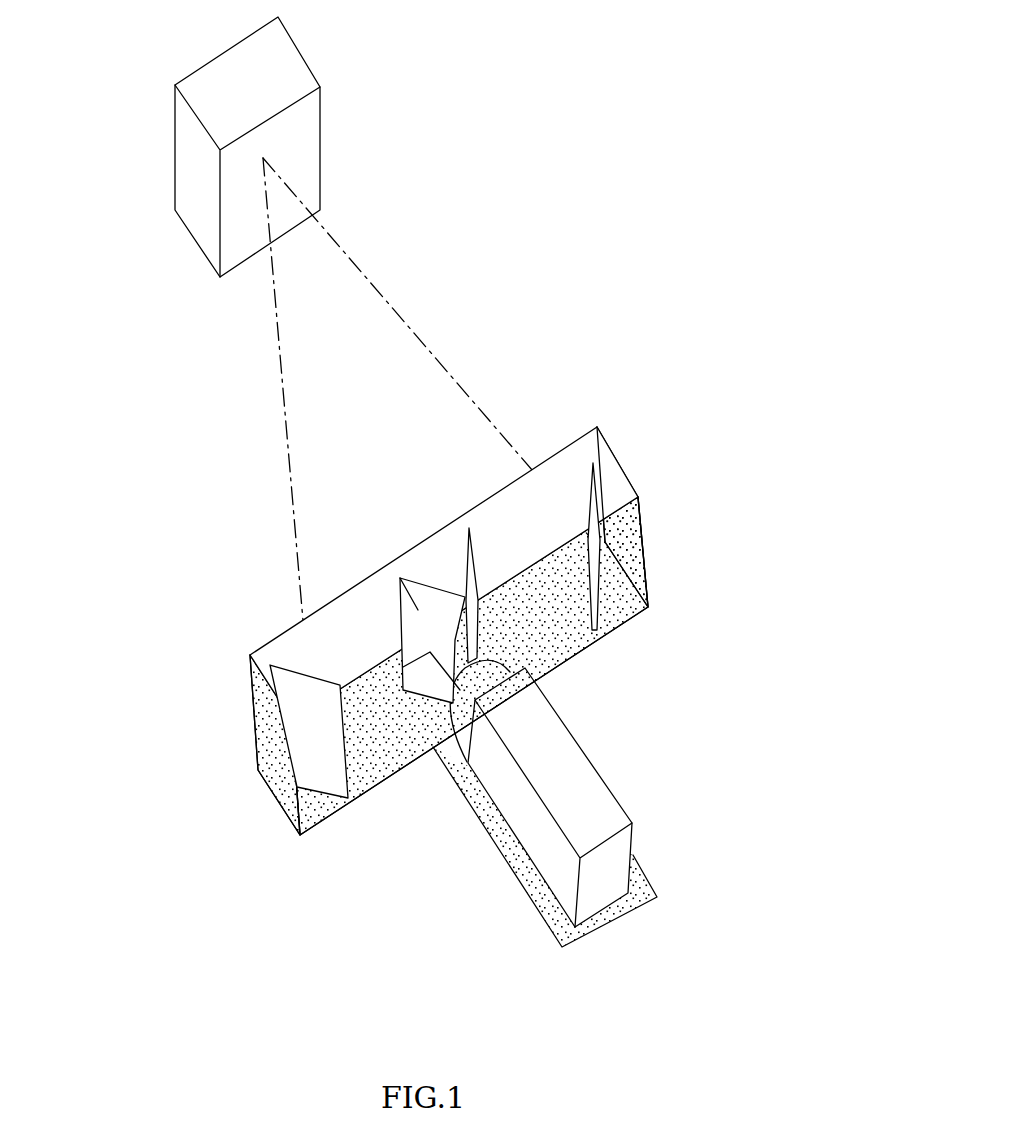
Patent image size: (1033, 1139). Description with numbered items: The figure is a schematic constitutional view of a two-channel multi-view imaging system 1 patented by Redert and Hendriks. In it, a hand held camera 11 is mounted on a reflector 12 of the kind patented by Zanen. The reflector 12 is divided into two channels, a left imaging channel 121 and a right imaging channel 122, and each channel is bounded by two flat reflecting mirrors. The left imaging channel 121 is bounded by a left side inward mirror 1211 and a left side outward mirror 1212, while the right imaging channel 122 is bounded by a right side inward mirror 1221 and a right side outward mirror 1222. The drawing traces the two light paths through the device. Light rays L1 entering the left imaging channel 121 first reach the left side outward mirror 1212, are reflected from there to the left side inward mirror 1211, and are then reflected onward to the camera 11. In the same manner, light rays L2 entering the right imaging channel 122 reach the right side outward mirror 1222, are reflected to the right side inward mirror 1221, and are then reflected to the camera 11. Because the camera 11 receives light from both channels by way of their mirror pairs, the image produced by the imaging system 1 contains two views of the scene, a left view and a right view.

The imaging system 1 is at (648, 250).
The hand held camera 11 is at (553, 763).
The reflector 12 is at (606, 468).
The left imaging channel 121 is at (300, 650).
The left side inward mirror 1211 is at (397, 578).
The left side outward mirror 1212 is at (293, 690).
The right imaging channel 122 is at (575, 467).
The right side inward mirror 1221 is at (470, 585).
The right side outward mirror 1222 is at (640, 498).
The light rays L1 is at (280, 347).
The light rays L2 is at (383, 298).